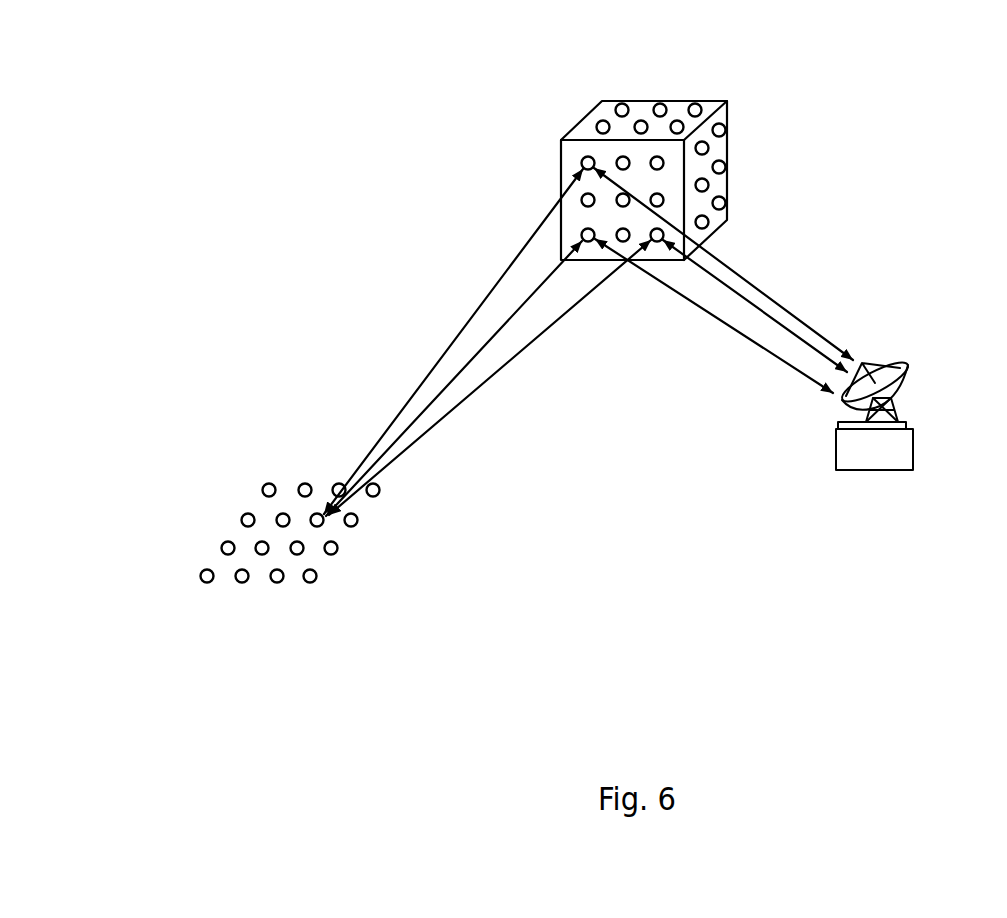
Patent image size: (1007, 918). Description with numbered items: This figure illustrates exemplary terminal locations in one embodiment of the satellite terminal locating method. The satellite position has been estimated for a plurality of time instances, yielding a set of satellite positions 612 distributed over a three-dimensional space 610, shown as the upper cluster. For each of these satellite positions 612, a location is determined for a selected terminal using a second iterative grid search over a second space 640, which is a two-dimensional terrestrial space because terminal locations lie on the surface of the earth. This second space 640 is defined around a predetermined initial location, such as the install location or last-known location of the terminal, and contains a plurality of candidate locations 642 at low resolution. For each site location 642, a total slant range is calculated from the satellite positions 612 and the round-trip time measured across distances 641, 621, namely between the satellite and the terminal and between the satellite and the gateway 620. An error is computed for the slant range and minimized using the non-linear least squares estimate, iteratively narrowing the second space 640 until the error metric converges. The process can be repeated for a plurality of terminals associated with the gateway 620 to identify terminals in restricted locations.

The 3D space 610 is at (752, 95).
The satellite positions 612 is at (580, 122).
The gateway 620 is at (912, 423).
The distance 621 is at (740, 333).
The second space 640 is at (366, 550).
The distance 641 is at (505, 366).
The locations 642 is at (332, 484).